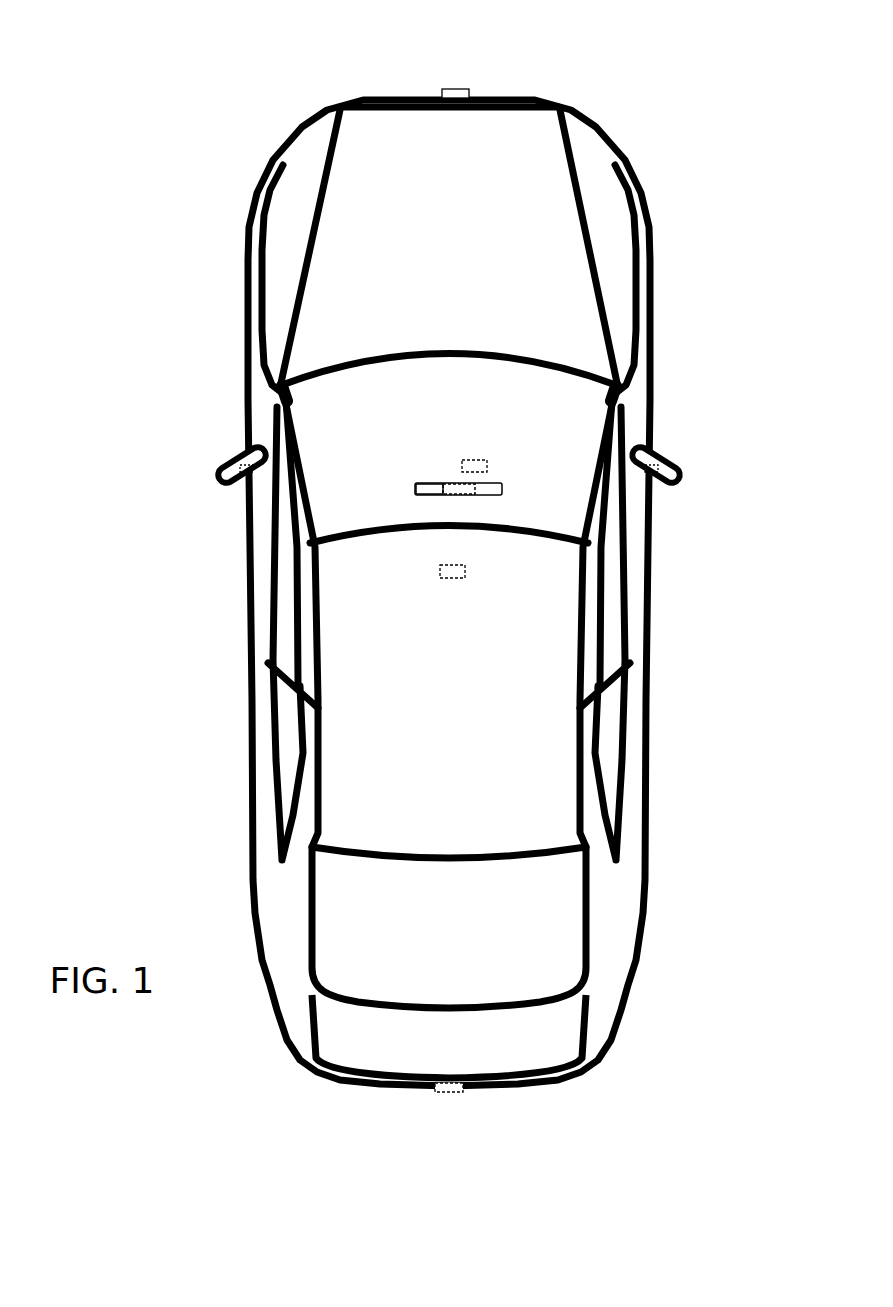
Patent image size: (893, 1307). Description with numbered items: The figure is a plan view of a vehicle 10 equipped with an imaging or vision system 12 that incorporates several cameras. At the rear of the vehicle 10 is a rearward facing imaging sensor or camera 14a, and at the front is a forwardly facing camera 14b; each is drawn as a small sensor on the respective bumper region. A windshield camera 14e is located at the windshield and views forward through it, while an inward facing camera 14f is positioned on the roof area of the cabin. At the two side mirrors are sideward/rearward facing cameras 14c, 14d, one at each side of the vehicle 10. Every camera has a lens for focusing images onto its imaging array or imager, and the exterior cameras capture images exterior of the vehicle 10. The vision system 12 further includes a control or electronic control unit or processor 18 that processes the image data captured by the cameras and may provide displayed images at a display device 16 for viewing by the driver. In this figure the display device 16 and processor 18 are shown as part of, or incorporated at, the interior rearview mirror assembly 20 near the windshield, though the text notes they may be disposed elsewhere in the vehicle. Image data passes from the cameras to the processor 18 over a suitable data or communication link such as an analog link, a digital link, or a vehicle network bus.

The vehicle 10 is at (194, 180).
The vision system 12 is at (399, 1114).
The rearward facing camera 14a is at (455, 1092).
The forwardly facing camera 14b is at (460, 87).
The sideward/rearward facing camera 14c is at (237, 465).
The sideward/rearward facing camera 14d is at (661, 465).
The windshield camera 14e is at (477, 462).
The inward facing camera 14f is at (443, 577).
The display device 16 is at (430, 487).
The electronic control unit (ECU) or processor 18 is at (453, 483).
The interior rearview mirror assembly 20 is at (502, 483).